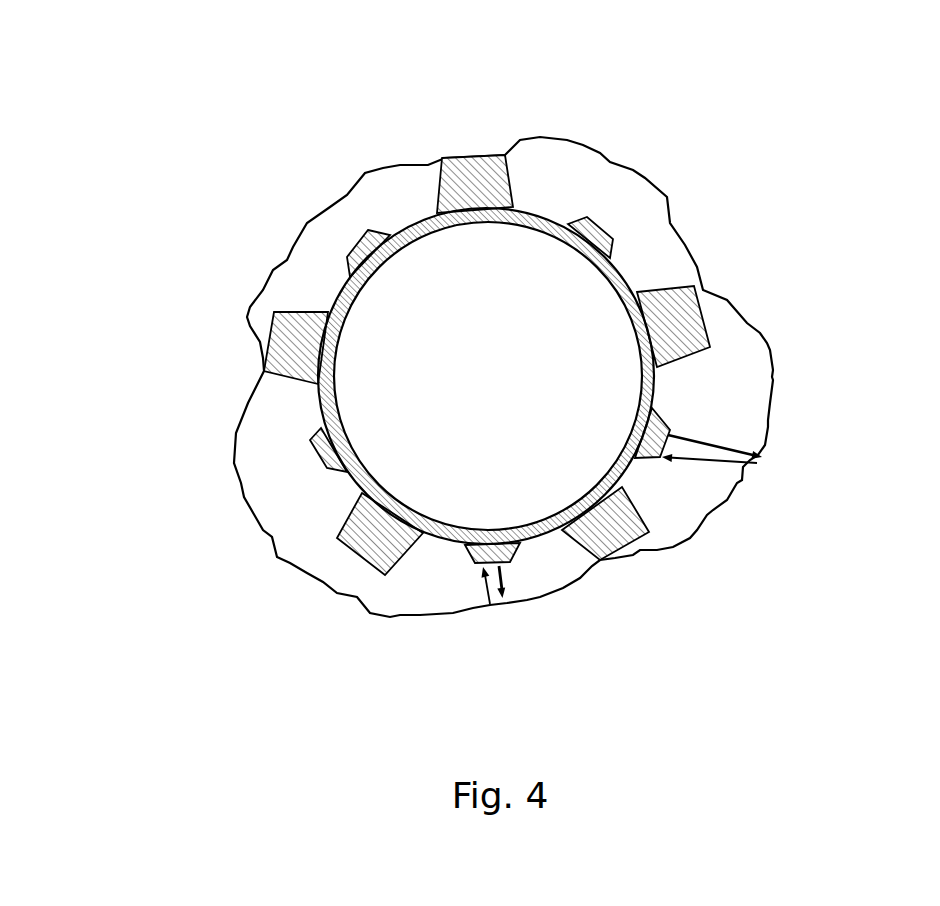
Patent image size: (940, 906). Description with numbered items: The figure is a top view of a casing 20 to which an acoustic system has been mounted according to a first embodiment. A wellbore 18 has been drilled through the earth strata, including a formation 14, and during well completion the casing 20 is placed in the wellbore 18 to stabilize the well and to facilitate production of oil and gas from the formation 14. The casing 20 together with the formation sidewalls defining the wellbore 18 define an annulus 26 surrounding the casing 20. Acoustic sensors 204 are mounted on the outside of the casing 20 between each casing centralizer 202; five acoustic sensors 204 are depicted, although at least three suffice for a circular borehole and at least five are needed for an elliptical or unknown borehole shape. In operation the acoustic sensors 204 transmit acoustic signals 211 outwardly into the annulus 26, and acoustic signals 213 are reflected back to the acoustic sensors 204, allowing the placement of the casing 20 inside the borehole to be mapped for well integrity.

The formation 14 is at (502, 373).
The wellbore 18 is at (265, 278).
The casing 20 is at (636, 469).
The annulus 26 is at (598, 153).
The casing centralizer 202 is at (468, 158).
The acoustic sensors 204 is at (603, 226).
The acoustic signals 211 is at (738, 465).
The acoustic signals 213 is at (738, 465).